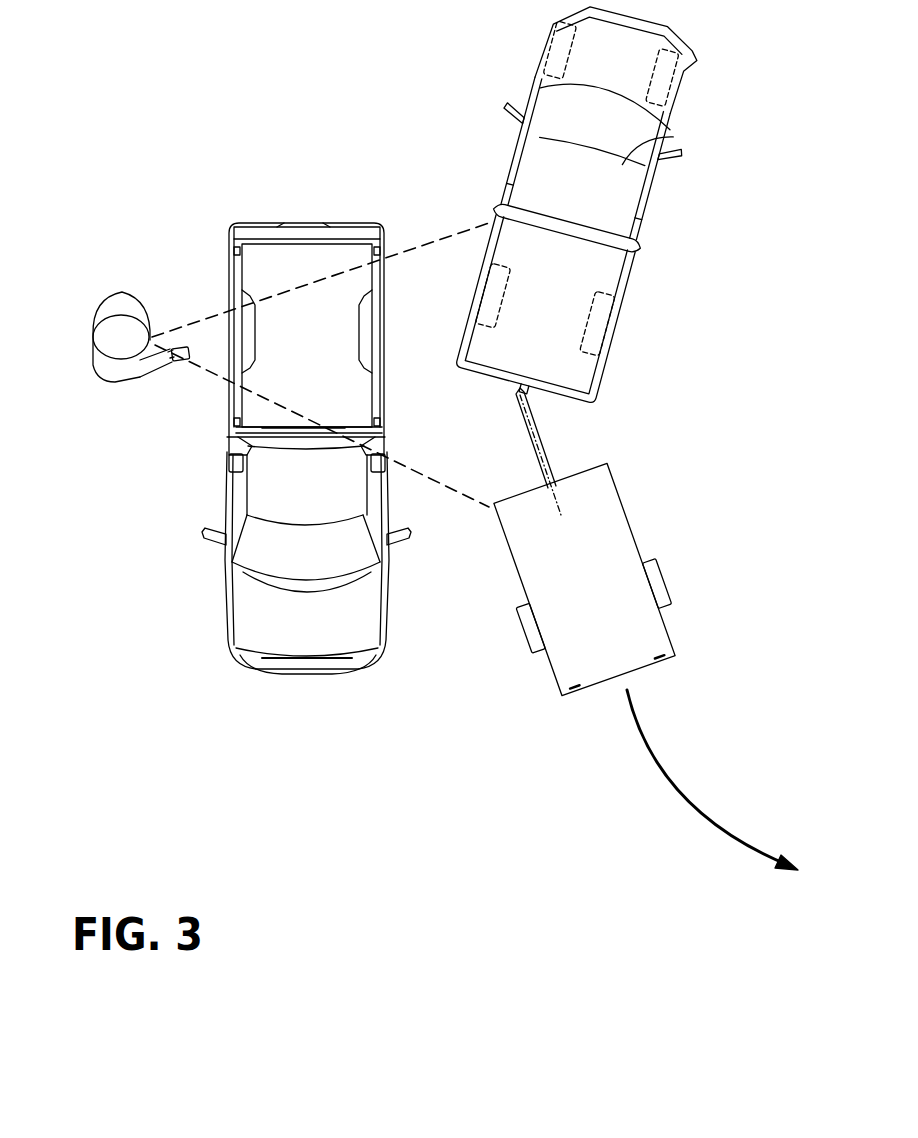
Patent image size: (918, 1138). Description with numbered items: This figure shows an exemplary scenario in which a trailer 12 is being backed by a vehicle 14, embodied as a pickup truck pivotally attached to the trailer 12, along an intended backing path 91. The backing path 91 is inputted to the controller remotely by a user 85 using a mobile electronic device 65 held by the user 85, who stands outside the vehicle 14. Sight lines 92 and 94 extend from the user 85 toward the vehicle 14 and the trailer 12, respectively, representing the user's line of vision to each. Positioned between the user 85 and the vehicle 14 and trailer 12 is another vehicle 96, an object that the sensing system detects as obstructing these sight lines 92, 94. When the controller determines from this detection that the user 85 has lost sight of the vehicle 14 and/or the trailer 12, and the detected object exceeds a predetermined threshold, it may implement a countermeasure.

The trailer 12 is at (610, 512).
The vehicle 14 is at (622, 163).
The mobile electronic device 65 is at (186, 363).
The user 85 is at (114, 333).
The intended backing path 91 is at (670, 770).
The sight line 92 is at (420, 246).
The sight line 94 is at (443, 478).
The vehicle 96 is at (268, 257).